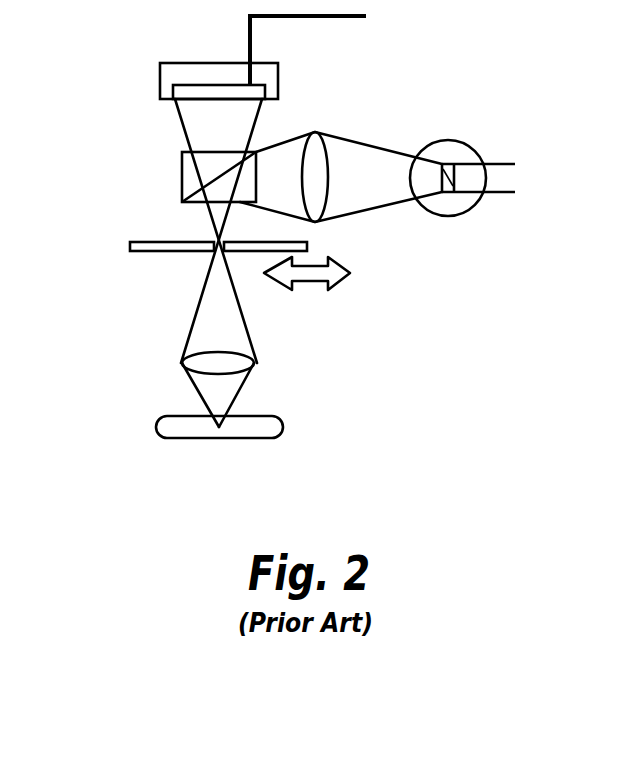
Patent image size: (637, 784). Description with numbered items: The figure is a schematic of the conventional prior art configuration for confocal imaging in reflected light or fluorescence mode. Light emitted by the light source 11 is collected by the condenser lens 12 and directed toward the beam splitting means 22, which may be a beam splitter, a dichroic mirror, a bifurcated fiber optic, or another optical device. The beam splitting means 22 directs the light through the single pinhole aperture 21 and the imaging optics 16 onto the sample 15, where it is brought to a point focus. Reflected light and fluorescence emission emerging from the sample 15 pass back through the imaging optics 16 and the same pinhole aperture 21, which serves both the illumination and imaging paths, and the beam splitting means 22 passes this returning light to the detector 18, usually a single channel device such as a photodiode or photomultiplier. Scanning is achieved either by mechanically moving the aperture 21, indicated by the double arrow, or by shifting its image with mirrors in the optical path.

The detector 18 is at (160, 85).
The beam splitting means 22 is at (182, 179).
The condenser lens 12 is at (315, 132).
The light source 11 is at (448, 140).
The pinhole aperture 21 is at (130, 246).
The imaging optics 16 is at (182, 363).
The sample 15 is at (158, 421).